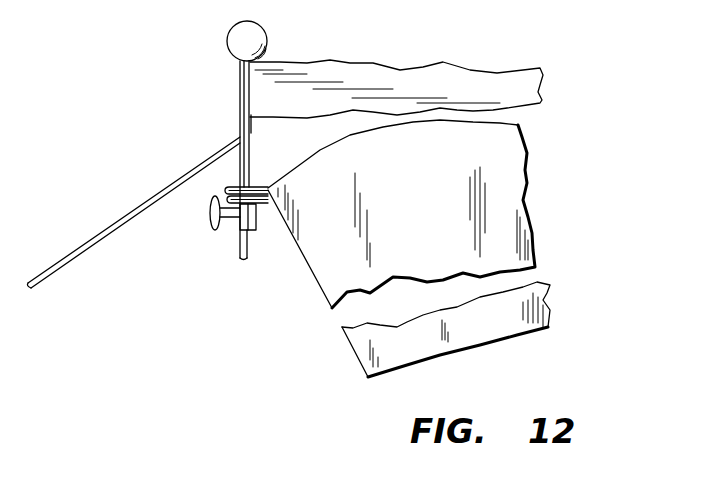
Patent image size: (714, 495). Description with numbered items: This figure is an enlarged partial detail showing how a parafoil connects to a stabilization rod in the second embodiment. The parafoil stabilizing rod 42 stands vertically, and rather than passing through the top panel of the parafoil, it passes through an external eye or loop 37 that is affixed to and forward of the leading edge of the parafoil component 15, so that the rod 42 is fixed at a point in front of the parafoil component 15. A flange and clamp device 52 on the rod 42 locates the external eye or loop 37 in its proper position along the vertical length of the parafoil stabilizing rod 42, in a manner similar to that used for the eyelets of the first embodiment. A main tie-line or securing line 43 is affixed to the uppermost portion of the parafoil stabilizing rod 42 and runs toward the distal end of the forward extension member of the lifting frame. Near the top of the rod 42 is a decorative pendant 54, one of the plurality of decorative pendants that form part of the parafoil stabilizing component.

The parafoil component 15 is at (515, 150).
The external eye or loop 37 is at (236, 186).
The parafoil stabilizing rod 42 is at (250, 164).
The main tie-line or main securing line 43 is at (123, 217).
The flange and clamp device 52 is at (255, 226).
The decorative pendant 54 is at (368, 62).